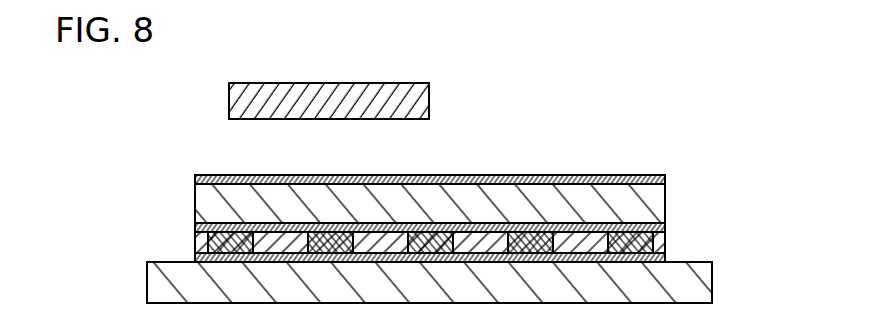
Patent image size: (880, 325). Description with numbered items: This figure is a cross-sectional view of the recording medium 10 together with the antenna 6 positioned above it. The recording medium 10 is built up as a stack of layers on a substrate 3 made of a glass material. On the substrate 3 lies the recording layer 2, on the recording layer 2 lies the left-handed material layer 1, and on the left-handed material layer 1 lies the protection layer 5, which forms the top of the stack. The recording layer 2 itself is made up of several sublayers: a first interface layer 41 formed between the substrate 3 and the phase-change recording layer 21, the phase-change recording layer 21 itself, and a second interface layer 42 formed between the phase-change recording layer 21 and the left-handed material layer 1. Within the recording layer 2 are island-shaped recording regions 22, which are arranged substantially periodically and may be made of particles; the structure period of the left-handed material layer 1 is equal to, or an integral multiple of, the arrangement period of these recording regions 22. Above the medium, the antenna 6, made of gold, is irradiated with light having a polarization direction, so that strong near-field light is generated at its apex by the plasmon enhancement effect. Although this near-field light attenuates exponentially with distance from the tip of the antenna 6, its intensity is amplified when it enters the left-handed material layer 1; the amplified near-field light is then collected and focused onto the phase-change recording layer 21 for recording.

The recording medium 10 is at (705, 127).
The left-handed material layer 1 is at (667, 202).
The recording layer 2 is at (493, 195).
The substrate 3 is at (702, 280).
The protection layer 5 is at (632, 176).
The antenna 6 is at (240, 103).
The phase-change recording layer 21 is at (477, 190).
The recording regions 22 is at (537, 230).
The first interface layer 41 is at (477, 250).
The second interface layer 42 is at (667, 223).